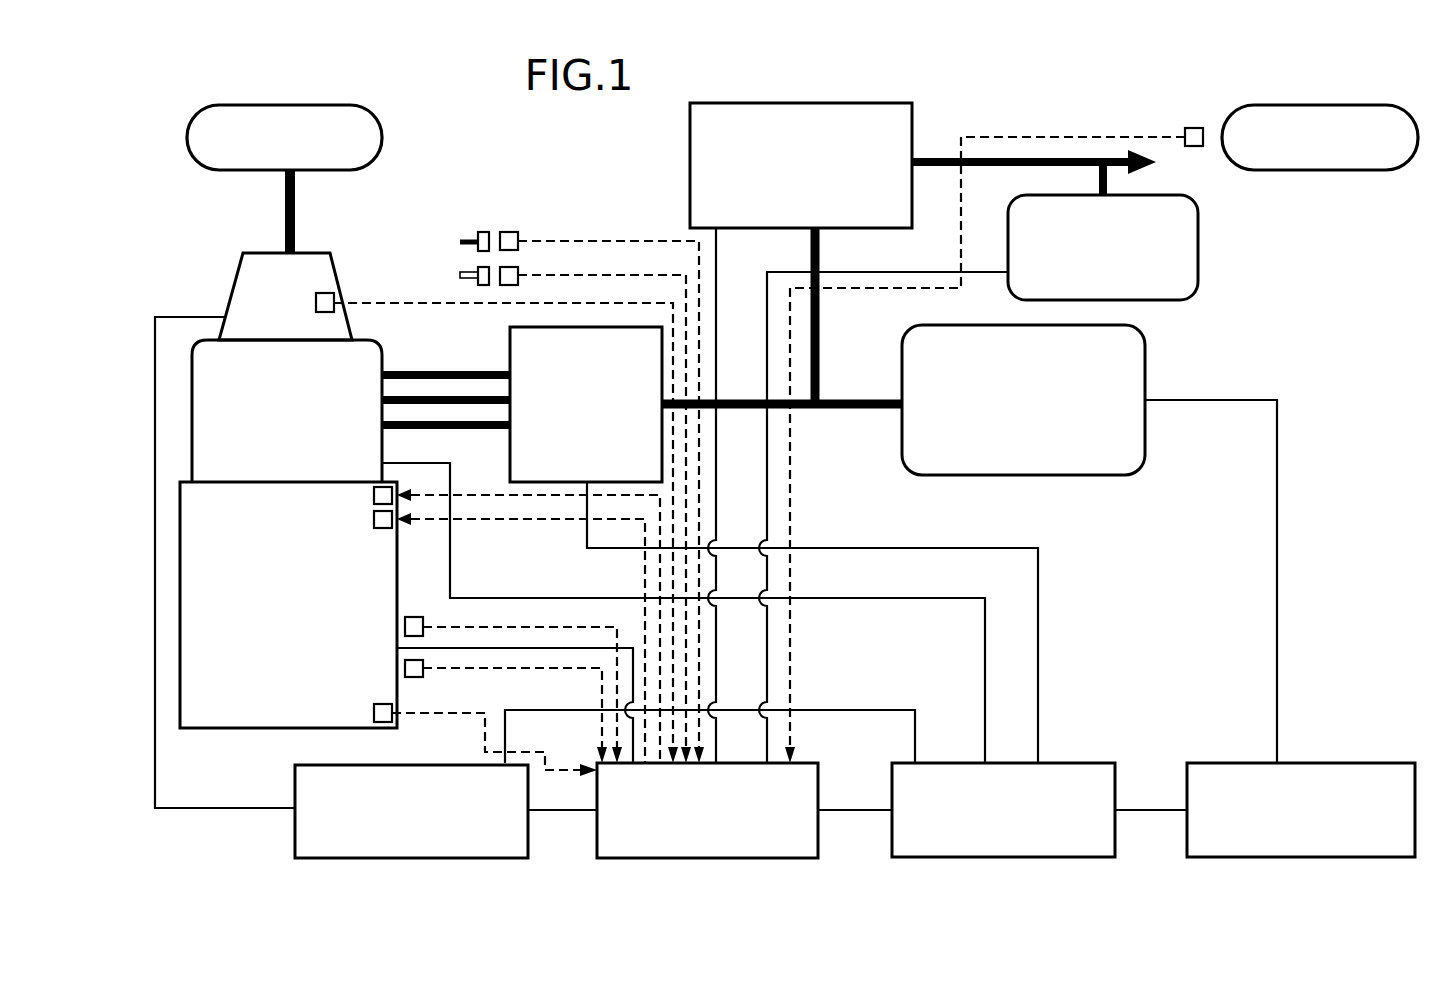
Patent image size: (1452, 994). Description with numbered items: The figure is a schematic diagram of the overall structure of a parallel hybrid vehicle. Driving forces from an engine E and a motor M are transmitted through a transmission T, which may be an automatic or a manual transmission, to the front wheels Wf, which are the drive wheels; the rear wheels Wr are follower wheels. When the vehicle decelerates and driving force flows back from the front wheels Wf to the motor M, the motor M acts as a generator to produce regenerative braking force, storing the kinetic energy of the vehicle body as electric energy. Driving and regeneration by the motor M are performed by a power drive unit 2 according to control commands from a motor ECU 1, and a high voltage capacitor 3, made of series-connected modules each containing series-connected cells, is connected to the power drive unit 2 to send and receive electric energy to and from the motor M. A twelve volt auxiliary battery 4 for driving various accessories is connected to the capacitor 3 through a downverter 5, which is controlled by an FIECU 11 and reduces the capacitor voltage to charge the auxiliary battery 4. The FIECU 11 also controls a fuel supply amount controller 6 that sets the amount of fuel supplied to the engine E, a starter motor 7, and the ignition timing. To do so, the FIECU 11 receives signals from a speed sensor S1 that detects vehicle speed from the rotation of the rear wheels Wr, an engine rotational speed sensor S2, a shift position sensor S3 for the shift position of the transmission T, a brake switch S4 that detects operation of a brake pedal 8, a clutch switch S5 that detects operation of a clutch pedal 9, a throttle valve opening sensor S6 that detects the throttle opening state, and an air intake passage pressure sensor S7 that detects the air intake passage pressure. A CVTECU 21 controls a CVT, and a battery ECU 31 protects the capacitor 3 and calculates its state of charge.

The front wheels Wf is at (381, 142).
The rear wheels Wr is at (1368, 170).
The transmission T is at (275, 314).
The motor M is at (273, 421).
The engine E is at (274, 616).
The motor ECU 1 is at (996, 838).
The power drive unit 2 is at (572, 421).
The high voltage capacitor 3 is at (1014, 416).
The auxiliary battery 4 is at (1090, 258).
The downverter 5 is at (784, 182).
The fuel supply amount controller 6 is at (374, 495).
The starter motor 7 is at (374, 520).
The brake pedal 8 is at (478, 232).
The clutch pedal 9 is at (478, 272).
The FIECU 11 is at (696, 838).
The CVTECU 21 is at (392, 838).
The battery ECU 31 is at (1279, 838).
The speed sensor S1 is at (1194, 146).
The engine rotational speed sensor S2 is at (374, 712).
The shift position sensor S3 is at (330, 293).
The brake switch S4 is at (510, 232).
The clutch switch S5 is at (518, 270).
The throttle valve opening sensor S6 is at (423, 675).
The air intake passage pressure sensor S7 is at (413, 617).